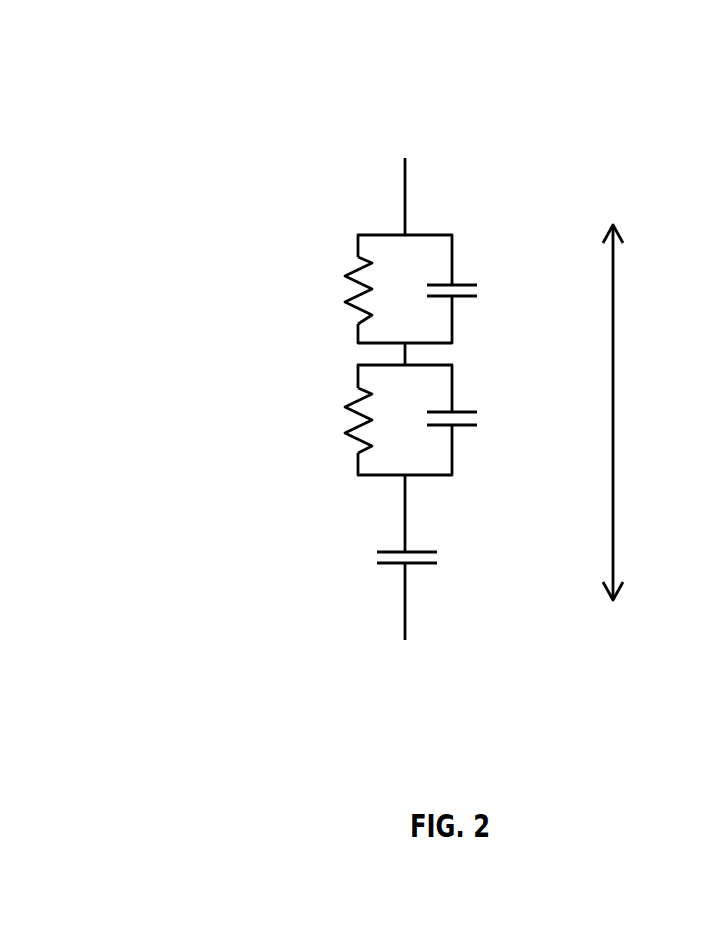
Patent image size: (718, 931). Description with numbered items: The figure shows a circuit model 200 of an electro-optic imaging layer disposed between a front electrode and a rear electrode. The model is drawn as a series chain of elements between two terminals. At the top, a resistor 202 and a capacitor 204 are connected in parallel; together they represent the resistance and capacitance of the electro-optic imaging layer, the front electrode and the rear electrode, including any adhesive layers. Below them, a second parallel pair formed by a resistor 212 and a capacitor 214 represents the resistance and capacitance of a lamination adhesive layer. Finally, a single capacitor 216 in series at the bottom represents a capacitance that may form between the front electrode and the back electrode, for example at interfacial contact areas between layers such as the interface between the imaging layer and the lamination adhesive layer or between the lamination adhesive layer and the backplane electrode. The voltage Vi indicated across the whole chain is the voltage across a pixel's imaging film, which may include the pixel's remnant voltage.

The circuit model 200 is at (187, 64).
The resistor 202 is at (333, 282).
The capacitor 204 is at (480, 285).
The resistor 212 is at (340, 412).
The capacitor 214 is at (483, 420).
The capacitor 216 is at (452, 555).